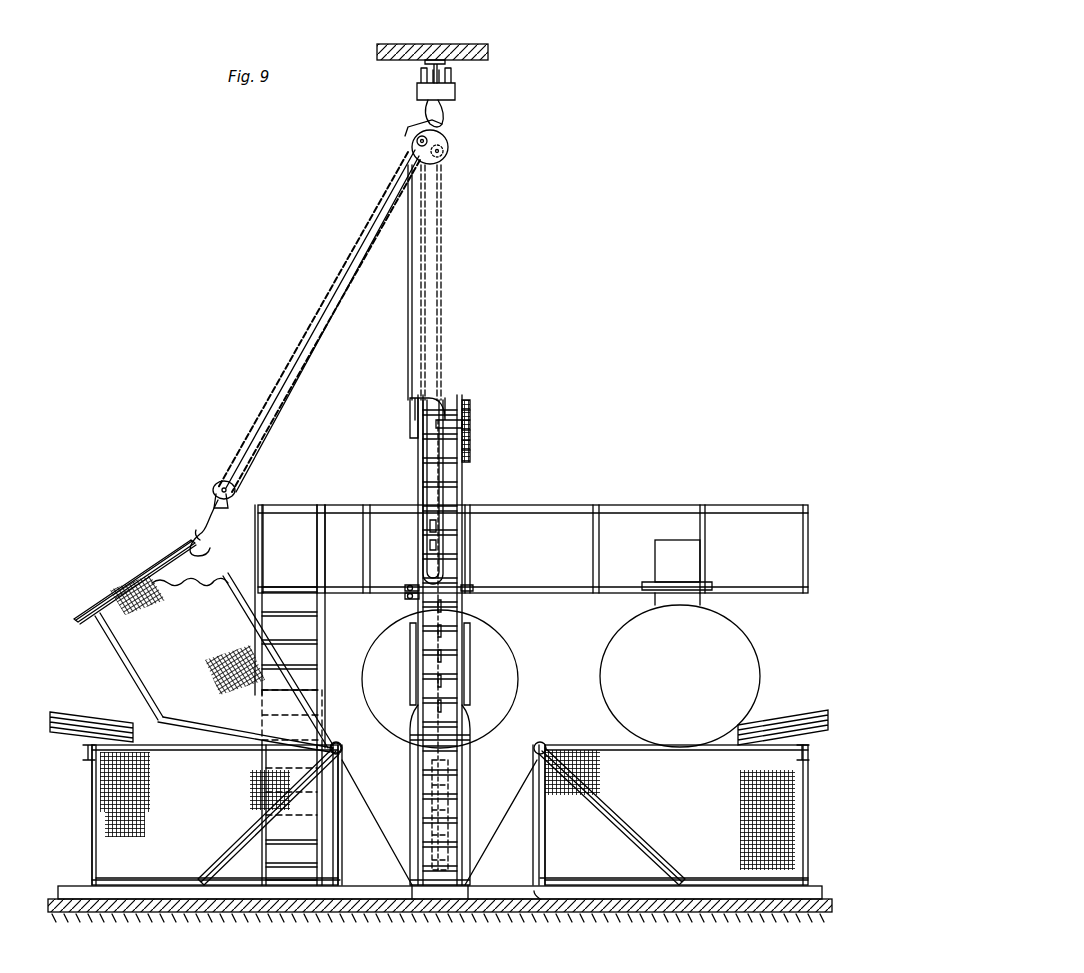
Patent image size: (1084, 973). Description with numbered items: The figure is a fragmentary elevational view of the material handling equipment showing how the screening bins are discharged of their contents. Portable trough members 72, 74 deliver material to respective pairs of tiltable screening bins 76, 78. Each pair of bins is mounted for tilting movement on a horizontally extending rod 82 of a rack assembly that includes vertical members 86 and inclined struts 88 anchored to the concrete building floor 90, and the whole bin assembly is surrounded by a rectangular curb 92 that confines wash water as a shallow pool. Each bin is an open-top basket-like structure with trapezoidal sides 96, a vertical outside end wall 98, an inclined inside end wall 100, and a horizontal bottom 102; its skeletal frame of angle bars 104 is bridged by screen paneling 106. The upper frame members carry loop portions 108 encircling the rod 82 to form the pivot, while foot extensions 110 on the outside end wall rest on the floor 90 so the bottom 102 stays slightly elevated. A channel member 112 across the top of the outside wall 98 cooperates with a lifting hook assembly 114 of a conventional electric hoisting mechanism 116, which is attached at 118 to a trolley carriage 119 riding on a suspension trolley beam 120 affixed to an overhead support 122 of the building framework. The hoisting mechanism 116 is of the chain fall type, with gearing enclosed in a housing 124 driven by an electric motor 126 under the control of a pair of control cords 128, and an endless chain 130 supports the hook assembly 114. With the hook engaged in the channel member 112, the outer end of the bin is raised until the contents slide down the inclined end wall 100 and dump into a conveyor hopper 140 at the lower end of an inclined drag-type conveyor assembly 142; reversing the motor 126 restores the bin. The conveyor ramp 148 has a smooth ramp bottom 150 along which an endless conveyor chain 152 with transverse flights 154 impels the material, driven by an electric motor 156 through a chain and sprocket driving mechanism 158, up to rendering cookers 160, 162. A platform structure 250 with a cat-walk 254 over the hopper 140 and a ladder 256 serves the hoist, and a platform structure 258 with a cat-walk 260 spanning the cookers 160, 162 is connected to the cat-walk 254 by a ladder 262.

The portable trough member 72 is at (70, 711).
The portable trough member 74 is at (780, 715).
The screening bins 76 is at (206, 784).
The screening bins 78 is at (698, 779).
The horizontally extending rod 82 is at (340, 746).
The vertical members 86 is at (345, 844).
The inclined struts 88 is at (286, 806).
The building floor 90 is at (548, 894).
The curb 92 is at (628, 906).
The trapezoidal sides 96 is at (98, 836).
The outside end wall 98 is at (94, 801).
The inside end wall 100 is at (278, 834).
The bottom 102 is at (156, 900).
The angle bars 104 is at (178, 721).
The screen paneling 106 is at (171, 559).
The hook-like or loop portions 108 is at (340, 748).
The foot extensions 110 is at (98, 881).
The channel member 112 is at (88, 747).
The lifting hook assembly 114 is at (216, 486).
The hoisting mechanism 116 is at (460, 148).
The attachment 118 is at (438, 116).
The trolley carriage 119 is at (450, 95).
The suspension trolley beam 120 is at (439, 70).
The overhead support 122 is at (401, 44).
The housing 124 is at (412, 138).
The electric motor 126 is at (438, 125).
The control cords 128 is at (414, 378).
The endless chain 130 is at (306, 330).
The conveyor sump or hopper 140 is at (488, 822).
The drag-type conveyor assembly 142 is at (480, 420).
The conveyor ramp 148 is at (472, 605).
The ramp bottom 150 is at (448, 508).
The endless conveyor chain 152 is at (444, 649).
The transverse flights 154 is at (440, 544).
The electric motor 156 is at (450, 398).
The chain and sprocket driving mechanism 158 is at (470, 449).
The rendering cooker 160 is at (402, 677).
The rendering cooker 162 is at (688, 674).
The platform structure 250 is at (480, 736).
The cat-walk 254 is at (460, 701).
The ladder 256 is at (400, 898).
The platform structure 258 is at (628, 498).
The cat-walk 260 is at (540, 590).
The ladder 262 is at (326, 644).